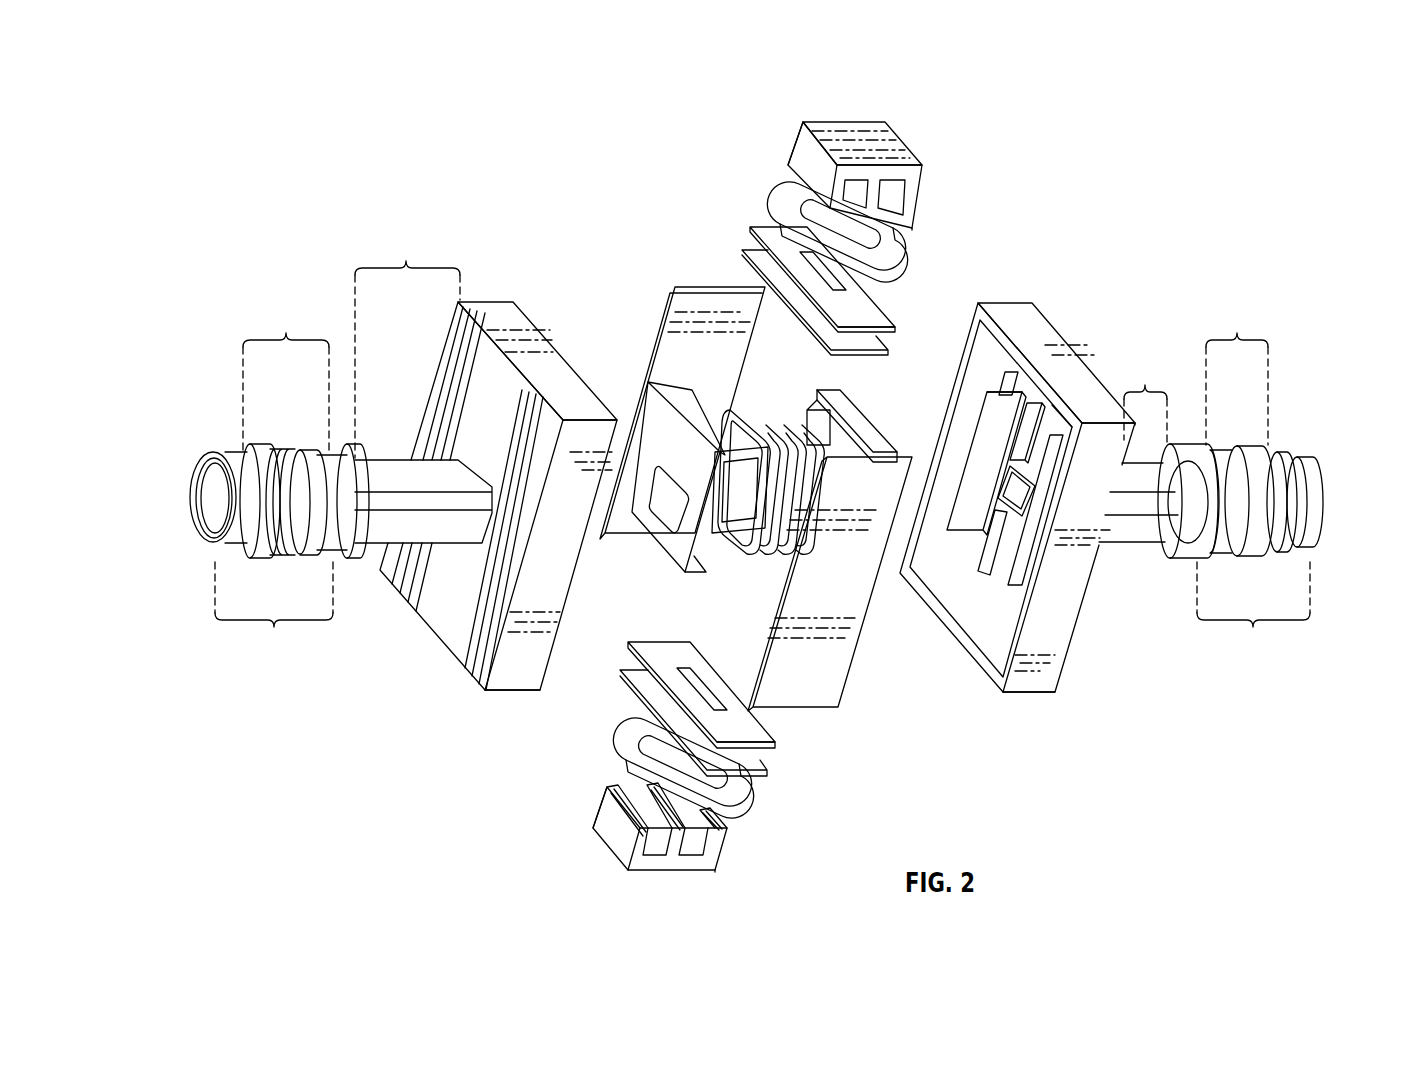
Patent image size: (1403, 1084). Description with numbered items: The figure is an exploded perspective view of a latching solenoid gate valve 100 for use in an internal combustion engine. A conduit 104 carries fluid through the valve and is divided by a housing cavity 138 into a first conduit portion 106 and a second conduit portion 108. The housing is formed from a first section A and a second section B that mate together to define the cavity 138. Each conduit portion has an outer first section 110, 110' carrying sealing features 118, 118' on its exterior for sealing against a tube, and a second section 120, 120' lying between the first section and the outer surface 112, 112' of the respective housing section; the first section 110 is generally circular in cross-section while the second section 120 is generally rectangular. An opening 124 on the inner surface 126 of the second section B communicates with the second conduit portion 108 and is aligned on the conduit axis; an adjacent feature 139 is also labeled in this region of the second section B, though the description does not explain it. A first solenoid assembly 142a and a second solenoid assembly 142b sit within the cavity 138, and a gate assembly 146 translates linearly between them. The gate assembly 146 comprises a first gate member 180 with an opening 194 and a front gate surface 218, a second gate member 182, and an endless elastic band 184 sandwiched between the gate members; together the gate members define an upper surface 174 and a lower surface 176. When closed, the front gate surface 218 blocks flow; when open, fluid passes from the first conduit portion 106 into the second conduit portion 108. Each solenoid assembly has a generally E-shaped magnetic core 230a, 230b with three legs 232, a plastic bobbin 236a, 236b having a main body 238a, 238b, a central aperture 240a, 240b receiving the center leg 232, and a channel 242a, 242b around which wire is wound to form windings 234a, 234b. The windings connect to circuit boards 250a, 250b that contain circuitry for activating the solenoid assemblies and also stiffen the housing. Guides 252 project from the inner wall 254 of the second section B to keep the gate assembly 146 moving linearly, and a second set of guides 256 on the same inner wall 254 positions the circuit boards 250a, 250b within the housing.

The latching solenoid gate valve 100 is at (1210, 290).
The conduit 104 is at (373, 547).
The first conduit portion 106 is at (253, 445).
The second conduit portion 108 is at (1288, 455).
The first section of first conduit portion 110 is at (274, 611).
The first section of second conduit portion 110' is at (1253, 611).
The outer surface of housing first section 112 is at (498, 496).
The outer surface of housing second section 112' is at (1030, 497).
The sealing features 118 is at (286, 377).
The sealing features 118' is at (1237, 374).
The second section of first conduit portion 120 is at (407, 345).
The second section of second conduit portion 120' is at (1145, 403).
The opening of housing B 124 is at (1013, 480).
The inner surface of second section B 126 is at (1063, 420).
The cavity 138 is at (985, 356).
The board surface 139 is at (1000, 442).
The first solenoid assembly 142a is at (925, 210).
The second solenoid assembly 142b is at (772, 850).
The gate assembly 146 is at (662, 562).
The upper surface of gate assembly 174 is at (660, 440).
The lower surface of gate assembly 176 is at (688, 575).
The first gate member 180 is at (636, 428).
The second gate member 182 is at (808, 398).
The endless elastic band 184 is at (840, 452).
The opening of first gate member 194 is at (680, 527).
The front gate surface 218 is at (658, 452).
The core of first solenoid assembly 230a is at (893, 136).
The core of second solenoid assembly 230b is at (670, 876).
The legs 232 is at (797, 152).
The winding of first solenoid assembly 234a is at (800, 200).
The winding of second solenoid assembly 234b is at (628, 740).
The first bobbin 236a is at (872, 290).
The second bobbin 236b is at (760, 737).
The main body of first bobbin 238a is at (892, 320).
The main body of second bobbin 238b is at (757, 717).
The aperture of first bobbin 240a is at (762, 222).
The aperture of second bobbin 240b is at (703, 688).
The channel of first bobbin 242a is at (888, 347).
The channel of second bobbin 242b is at (757, 757).
The first circuit board 250a is at (685, 280).
The second circuit board 250b is at (862, 690).
The guides 252 is at (1057, 420).
The inner wall of second section B 254 is at (1015, 368).
The second set of guides 256 is at (1043, 510).
The first section of housing A is at (457, 638).
The second section of housing B is at (1053, 643).